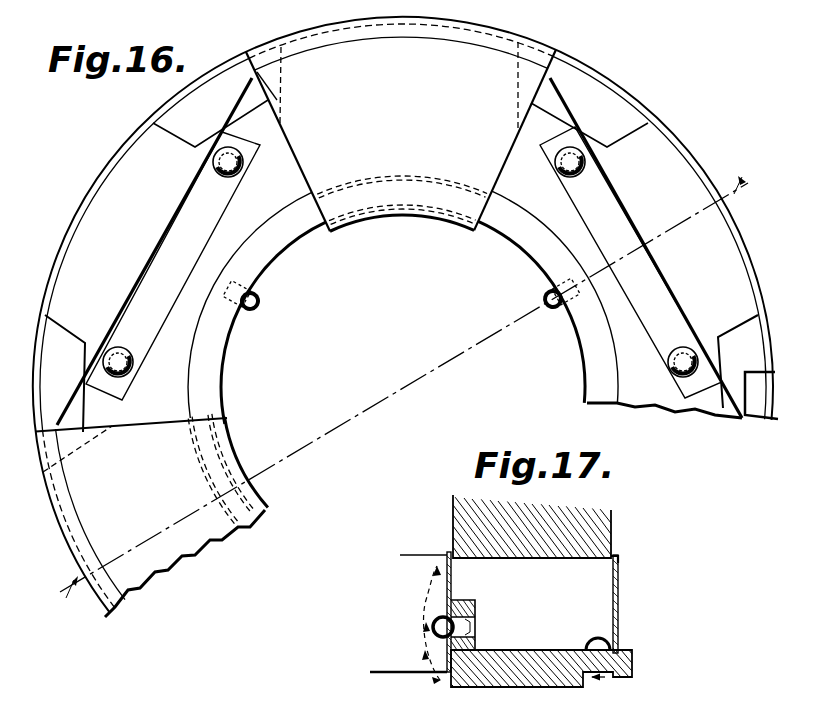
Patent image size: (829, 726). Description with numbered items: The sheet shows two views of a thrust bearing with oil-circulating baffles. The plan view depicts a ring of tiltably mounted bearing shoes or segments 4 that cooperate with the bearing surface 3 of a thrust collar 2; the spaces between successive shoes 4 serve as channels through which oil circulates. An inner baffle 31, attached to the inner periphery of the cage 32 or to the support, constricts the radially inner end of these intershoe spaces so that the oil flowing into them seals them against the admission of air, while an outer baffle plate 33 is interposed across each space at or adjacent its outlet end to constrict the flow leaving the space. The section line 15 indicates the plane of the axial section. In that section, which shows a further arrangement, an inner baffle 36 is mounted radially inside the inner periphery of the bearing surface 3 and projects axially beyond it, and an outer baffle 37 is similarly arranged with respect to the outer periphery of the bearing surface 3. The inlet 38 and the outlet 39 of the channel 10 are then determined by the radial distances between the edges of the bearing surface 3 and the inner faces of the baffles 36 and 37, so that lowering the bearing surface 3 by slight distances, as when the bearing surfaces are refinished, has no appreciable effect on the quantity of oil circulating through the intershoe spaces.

In FIG. 17, the thrust collar 2 is at (566, 532).
In FIG. 17, the bearing surface 3 is at (464, 565).
In FIG. 16, the bearing shoes or segments 4 is at (212, 457).
In FIG. 17, the channel 10 is at (604, 680).
In FIG. 16, the section line 15 is at (407, 392).
In FIG. 16, the inner baffle 31 is at (283, 250).
In FIG. 17, the cage 32 is at (513, 678).
In FIG. 16, the outer baffle plate 33 is at (174, 217).
In FIG. 17, the inner baffle 36 is at (447, 583).
In FIG. 17, the outer baffle 37 is at (621, 568).
In FIG. 17, the inlet 38 is at (447, 552).
In FIG. 17, the outlet 39 is at (620, 553).